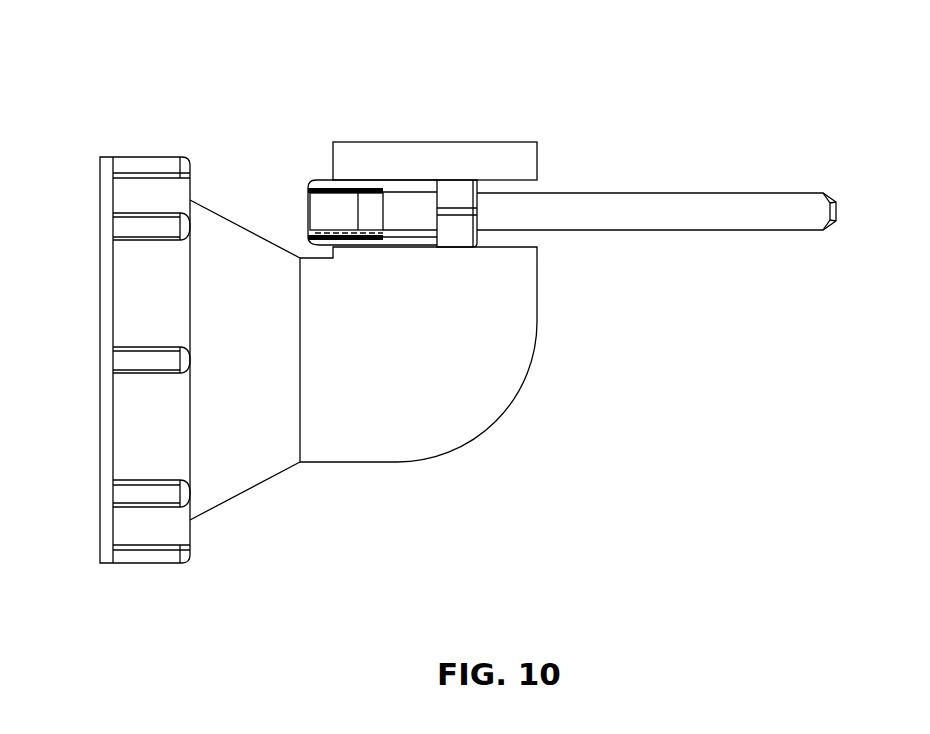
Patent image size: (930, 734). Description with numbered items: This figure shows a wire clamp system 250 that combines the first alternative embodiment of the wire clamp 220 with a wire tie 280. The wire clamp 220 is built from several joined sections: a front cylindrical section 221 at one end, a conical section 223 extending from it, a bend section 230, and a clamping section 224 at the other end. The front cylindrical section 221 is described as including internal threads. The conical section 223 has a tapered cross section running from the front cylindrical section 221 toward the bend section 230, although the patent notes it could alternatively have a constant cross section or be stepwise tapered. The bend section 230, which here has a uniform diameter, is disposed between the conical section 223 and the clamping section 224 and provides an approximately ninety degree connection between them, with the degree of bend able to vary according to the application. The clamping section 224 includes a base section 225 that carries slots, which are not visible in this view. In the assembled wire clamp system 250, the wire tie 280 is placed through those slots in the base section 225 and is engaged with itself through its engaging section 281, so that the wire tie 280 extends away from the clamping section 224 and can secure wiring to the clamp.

The wire clamp system 250 is at (108, 70).
The wire clamp 220 is at (123, 157).
The front cylindrical section 221 is at (148, 519).
The conical section 223 is at (249, 496).
The clamping section 224 is at (357, 138).
The base section 225 is at (314, 176).
The bend section 230 is at (519, 395).
The wire tie 280 is at (713, 189).
The engaging section 281 is at (457, 189).